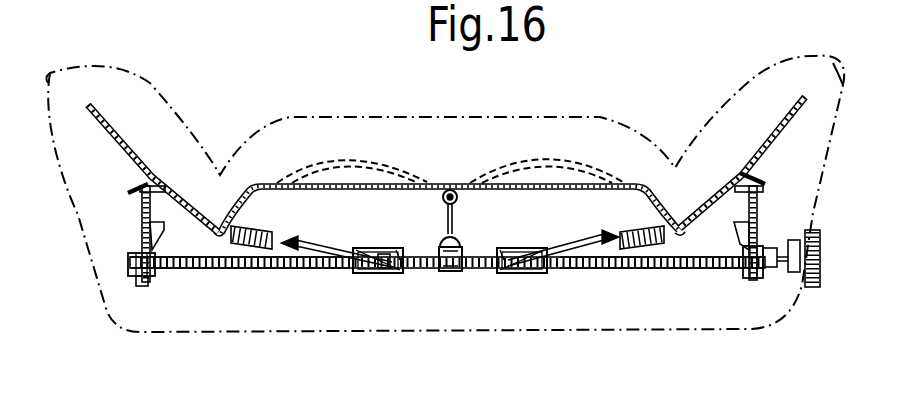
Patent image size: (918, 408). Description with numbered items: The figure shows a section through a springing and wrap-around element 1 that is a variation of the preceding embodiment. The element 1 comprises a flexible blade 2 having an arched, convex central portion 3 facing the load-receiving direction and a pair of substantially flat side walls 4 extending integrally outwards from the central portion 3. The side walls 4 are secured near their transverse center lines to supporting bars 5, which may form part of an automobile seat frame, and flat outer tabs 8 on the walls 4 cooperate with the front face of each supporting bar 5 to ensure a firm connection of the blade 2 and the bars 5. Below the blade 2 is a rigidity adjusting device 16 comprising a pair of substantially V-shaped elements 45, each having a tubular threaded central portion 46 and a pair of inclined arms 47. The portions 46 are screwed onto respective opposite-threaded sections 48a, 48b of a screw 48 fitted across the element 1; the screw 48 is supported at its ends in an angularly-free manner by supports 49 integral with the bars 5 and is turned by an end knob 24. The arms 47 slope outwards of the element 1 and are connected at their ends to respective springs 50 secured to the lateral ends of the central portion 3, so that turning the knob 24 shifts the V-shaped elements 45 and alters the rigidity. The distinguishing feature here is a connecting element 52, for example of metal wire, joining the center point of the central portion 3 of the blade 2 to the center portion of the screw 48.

The springing and wrap-around element 1 is at (300, 118).
The flexible blade 2 is at (585, 180).
The central portion 3 is at (500, 180).
The side walls 4 is at (134, 150).
The supporting bars 5 is at (140, 207).
The flat outer tabs 8 is at (130, 190).
The rigidity adjusting device 16 is at (458, 285).
The end knob 24 is at (820, 262).
The V-shaped elements 45 is at (360, 284).
The tubular threaded central portion 46 is at (383, 272).
The inclined arms 47 is at (347, 252).
The screw 48 is at (447, 319).
The threaded section 48a is at (207, 273).
The threaded section 48b is at (637, 265).
The supports 49 is at (140, 252).
The springs 50 is at (257, 253).
The connecting element 52 is at (468, 219).